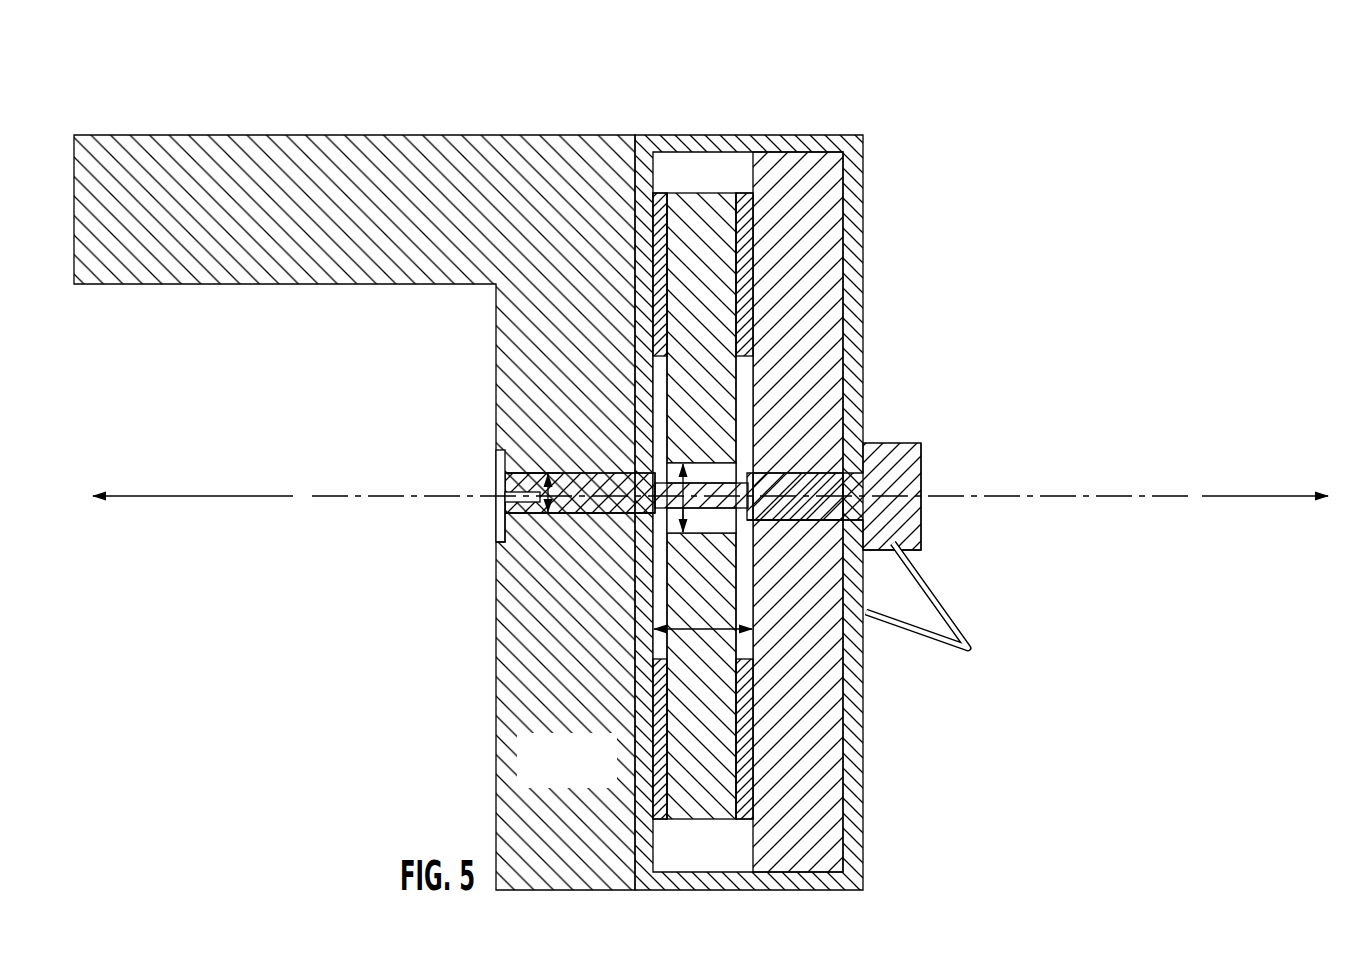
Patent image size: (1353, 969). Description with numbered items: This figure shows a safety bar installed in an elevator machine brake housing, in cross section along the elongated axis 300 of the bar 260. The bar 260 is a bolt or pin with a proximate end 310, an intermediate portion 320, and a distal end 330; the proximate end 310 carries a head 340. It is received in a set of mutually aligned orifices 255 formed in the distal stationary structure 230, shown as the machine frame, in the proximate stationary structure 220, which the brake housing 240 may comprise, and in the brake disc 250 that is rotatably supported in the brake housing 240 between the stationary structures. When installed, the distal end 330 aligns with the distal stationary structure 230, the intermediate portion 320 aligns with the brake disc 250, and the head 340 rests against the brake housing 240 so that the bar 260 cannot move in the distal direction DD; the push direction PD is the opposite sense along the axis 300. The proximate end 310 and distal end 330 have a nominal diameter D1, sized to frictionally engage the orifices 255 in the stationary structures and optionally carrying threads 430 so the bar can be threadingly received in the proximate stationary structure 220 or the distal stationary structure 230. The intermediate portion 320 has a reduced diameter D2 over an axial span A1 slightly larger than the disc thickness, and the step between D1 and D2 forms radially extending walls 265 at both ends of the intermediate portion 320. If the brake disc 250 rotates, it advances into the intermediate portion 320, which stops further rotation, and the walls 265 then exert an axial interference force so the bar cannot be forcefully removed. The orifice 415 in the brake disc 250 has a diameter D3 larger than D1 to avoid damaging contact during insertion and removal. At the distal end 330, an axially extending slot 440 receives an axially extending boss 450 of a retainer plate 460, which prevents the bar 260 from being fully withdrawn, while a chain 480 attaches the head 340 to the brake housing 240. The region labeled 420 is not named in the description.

The proximate stationary structure 220 is at (786, 358).
The distal stationary structure 230 is at (512, 760).
The brake housing 240 is at (878, 137).
The brake disc 250 is at (692, 215).
The orifices 255 is at (612, 528).
The bar 260 is at (606, 472).
The radially extending walls 265 is at (664, 518).
The elongated axis 300 is at (1098, 497).
The proximate end 310 is at (818, 471).
The intermediate portion 320 is at (740, 530).
The distal end 330 is at (551, 532).
The head 340 is at (922, 537).
The orifice in the brake disc 415 is at (660, 362).
The flange head 420 is at (748, 480).
The threads 430 is at (570, 472).
The axially extending slot 440 is at (530, 471).
The axially extending boss 450 is at (503, 541).
The retainer plate 460 is at (496, 452).
The chain 480 is at (972, 650).
The nominal diameter D1 is at (548, 472).
The reduced diameter D2 is at (688, 512).
The diameter of the orifice in the brake disc D3 is at (718, 512).
The axial span A1 is at (703, 630).
The distal direction DD is at (165, 496).
The push direction PD is at (1310, 497).